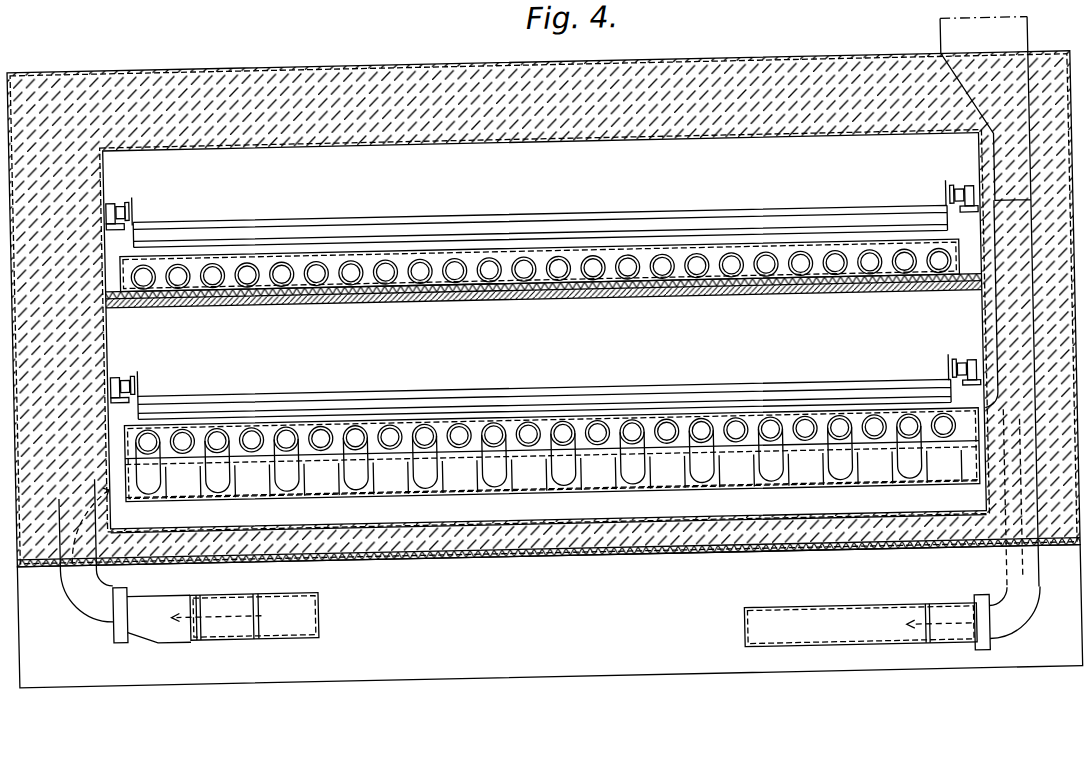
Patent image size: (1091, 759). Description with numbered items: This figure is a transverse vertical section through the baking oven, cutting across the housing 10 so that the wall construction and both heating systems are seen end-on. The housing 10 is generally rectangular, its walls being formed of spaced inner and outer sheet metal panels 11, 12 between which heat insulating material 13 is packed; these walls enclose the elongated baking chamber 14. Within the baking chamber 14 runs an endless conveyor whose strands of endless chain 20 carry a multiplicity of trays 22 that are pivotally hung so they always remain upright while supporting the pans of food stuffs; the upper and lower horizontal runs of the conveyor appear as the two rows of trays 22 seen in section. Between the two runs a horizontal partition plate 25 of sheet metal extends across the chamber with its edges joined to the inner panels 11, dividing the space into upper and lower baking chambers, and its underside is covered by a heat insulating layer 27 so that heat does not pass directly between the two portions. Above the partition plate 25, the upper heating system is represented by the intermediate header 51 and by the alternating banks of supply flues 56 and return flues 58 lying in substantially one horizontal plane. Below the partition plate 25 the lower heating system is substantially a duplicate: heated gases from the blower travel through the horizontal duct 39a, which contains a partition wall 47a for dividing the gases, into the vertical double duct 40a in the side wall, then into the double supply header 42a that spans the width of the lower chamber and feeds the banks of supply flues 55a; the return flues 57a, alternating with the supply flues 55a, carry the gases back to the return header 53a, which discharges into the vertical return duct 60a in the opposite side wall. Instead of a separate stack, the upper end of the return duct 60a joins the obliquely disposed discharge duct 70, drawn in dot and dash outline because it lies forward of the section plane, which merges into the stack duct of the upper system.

The housing 10 is at (346, 66).
The inner sheet metal panel 11 is at (426, 155).
The outer sheet metal panel 12 is at (425, 76).
The heat insulating material 13 is at (465, 108).
The baking chamber 14 is at (551, 161).
The endless chain 20 is at (132, 208).
The tray 22 is at (575, 234).
The partition plate 25 is at (672, 309).
The heat insulating layer 27 is at (743, 312).
The intermediate header 51 is at (573, 294).
The supply flue 56 is at (205, 306).
The return flue 58 is at (377, 296).
The discharge duct 70 is at (1005, 340).
The return header 53a is at (434, 444).
The supply flue 55a is at (410, 481).
The return flue 57a is at (310, 436).
The double supply header 42a is at (429, 496).
The vertical double duct 40a is at (91, 521).
The horizontal duct 39a is at (232, 597).
The partition wall 47a is at (252, 623).
The return duct 60a is at (1004, 518).